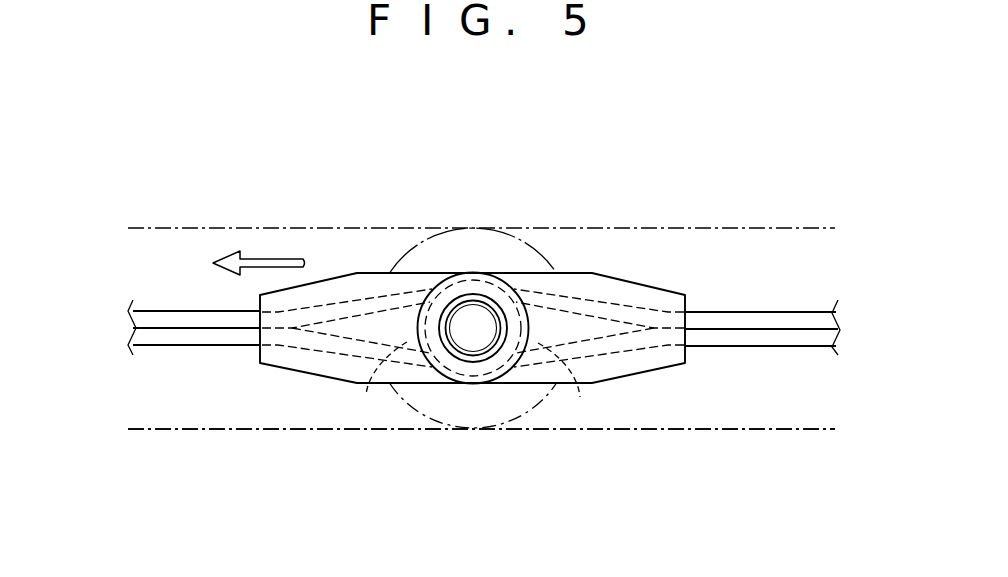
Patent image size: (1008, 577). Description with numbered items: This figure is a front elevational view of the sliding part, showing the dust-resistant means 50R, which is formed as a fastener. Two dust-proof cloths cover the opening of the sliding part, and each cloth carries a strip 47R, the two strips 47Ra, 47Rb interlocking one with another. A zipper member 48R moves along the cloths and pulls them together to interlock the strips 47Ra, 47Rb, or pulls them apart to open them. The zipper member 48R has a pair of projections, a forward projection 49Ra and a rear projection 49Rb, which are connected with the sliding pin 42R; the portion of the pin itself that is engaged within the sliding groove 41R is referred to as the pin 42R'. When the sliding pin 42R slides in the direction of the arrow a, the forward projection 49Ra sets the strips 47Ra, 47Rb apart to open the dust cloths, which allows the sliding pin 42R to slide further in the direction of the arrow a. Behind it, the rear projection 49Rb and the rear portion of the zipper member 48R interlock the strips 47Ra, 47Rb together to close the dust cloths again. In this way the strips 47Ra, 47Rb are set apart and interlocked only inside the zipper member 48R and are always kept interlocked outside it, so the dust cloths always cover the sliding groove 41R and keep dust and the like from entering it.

The sliding groove 41R is at (718, 232).
The sliding pin 42R is at (473, 375).
The pin engaged within the sliding groove 42R' is at (459, 300).
The strip 47R is at (785, 322).
The strip 47Ra is at (183, 320).
The strip 47Rb is at (170, 337).
The zipper member 48R is at (588, 278).
The forward projection 49Ra is at (371, 386).
The rear projection 49Rb is at (576, 387).
The dust-resistant means 50R is at (258, 417).
The arrow a is at (273, 258).